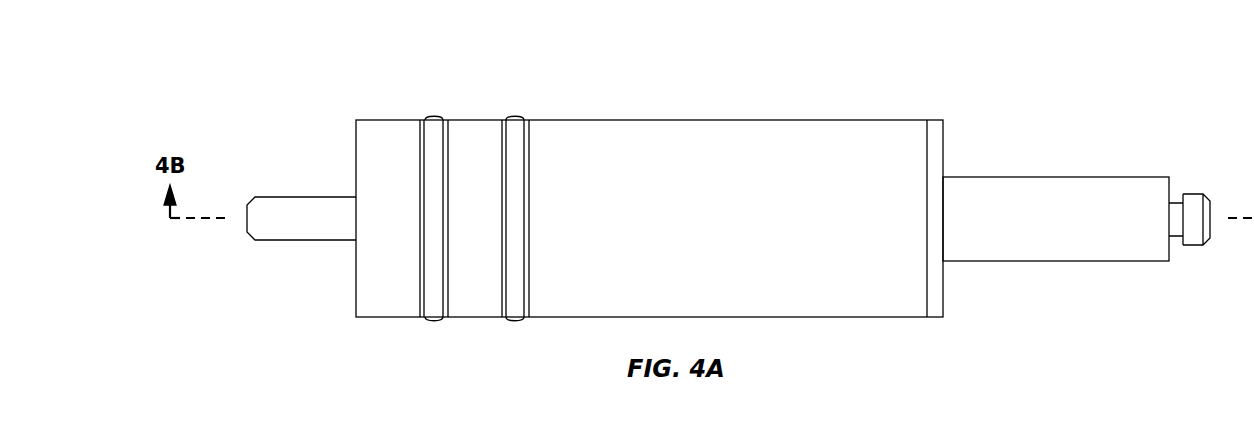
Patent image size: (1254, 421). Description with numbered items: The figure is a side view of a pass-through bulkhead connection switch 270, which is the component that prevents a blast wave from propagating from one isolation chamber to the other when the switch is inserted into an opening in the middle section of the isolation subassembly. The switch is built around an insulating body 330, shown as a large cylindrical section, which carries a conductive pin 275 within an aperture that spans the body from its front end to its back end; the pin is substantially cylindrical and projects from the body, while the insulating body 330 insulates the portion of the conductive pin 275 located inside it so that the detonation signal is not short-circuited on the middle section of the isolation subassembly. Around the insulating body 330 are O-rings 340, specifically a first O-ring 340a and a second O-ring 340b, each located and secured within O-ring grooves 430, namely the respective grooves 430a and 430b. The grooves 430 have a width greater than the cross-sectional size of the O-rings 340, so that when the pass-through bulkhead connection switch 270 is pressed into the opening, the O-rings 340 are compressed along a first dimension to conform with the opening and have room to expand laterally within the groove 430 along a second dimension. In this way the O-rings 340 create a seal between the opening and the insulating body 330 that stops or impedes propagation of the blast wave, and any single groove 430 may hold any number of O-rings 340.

The pass-through bulkhead connection switch 270 is at (994, 88).
The conductive pin 275 is at (1067, 206).
The insulating body 330 is at (692, 145).
The O-rings 340 is at (545, 67).
The O-ring 340a is at (437, 117).
The O-ring 340b is at (515, 117).
The O-ring grooves 430 is at (538, 358).
The O-ring groove 430a is at (418, 322).
The O-ring groove 430b is at (500, 322).